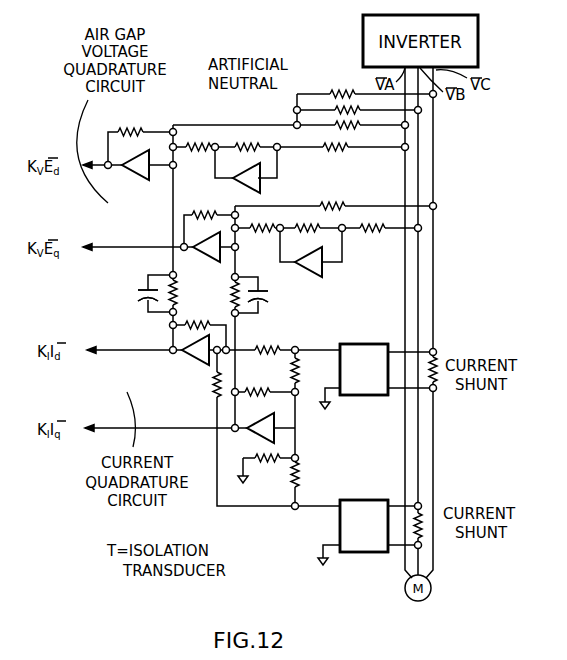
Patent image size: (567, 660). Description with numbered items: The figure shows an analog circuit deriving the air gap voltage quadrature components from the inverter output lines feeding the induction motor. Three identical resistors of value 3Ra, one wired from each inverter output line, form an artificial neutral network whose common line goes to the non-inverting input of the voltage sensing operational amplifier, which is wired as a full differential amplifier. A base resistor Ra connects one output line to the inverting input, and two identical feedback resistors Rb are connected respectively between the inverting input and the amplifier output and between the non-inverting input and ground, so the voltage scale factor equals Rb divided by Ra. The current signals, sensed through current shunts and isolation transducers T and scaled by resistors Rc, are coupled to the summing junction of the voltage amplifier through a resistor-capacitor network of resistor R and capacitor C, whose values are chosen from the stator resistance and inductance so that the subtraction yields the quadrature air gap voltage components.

The feedback resistor Rb is at (219, 169).
The base resistor Ra is at (337, 136).
The artificial neutral resistor 3Ra is at (349, 132).
The current circuit resistor Rc is at (308, 436).
The network resistor R' R is at (228, 290).
The network capacitor C' C is at (201, 296).
The isolation transducer T is at (364, 448).